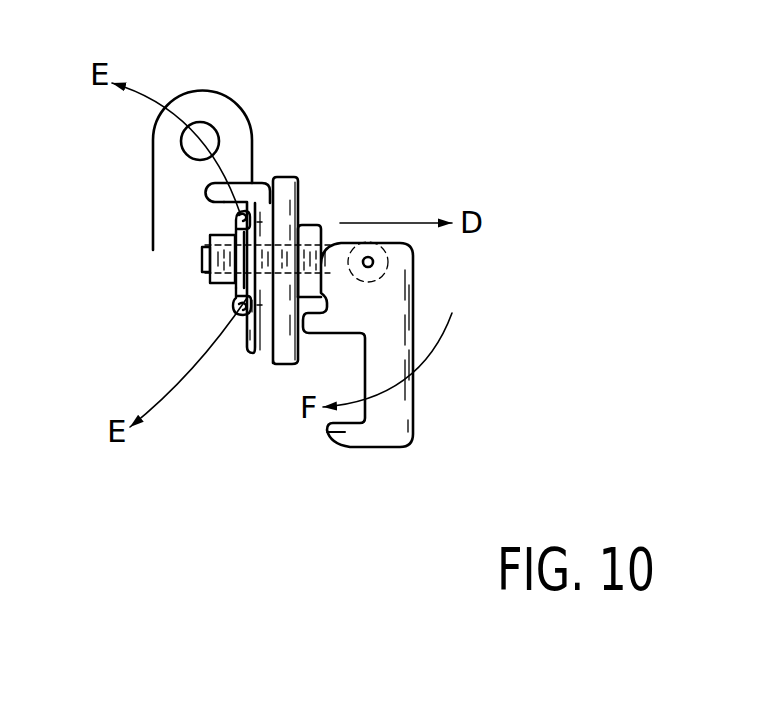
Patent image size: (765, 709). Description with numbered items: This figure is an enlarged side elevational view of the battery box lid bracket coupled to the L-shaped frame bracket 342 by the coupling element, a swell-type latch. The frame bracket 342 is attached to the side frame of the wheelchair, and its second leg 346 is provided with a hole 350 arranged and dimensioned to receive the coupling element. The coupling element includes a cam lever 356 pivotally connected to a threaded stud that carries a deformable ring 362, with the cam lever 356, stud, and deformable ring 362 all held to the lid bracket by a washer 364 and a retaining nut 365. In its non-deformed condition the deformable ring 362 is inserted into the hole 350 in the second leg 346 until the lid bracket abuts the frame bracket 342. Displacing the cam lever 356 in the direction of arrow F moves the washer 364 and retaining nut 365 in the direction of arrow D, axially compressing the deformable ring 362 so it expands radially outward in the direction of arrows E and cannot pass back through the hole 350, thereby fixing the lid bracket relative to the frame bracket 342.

The frame bracket 342 is at (252, 95).
The second leg 346 is at (258, 190).
The hole 350 is at (268, 224).
The cam lever 356 is at (323, 433).
The deformable ring 362 is at (232, 217).
The washer 364 is at (235, 307).
The retaining nut 365 is at (237, 281).